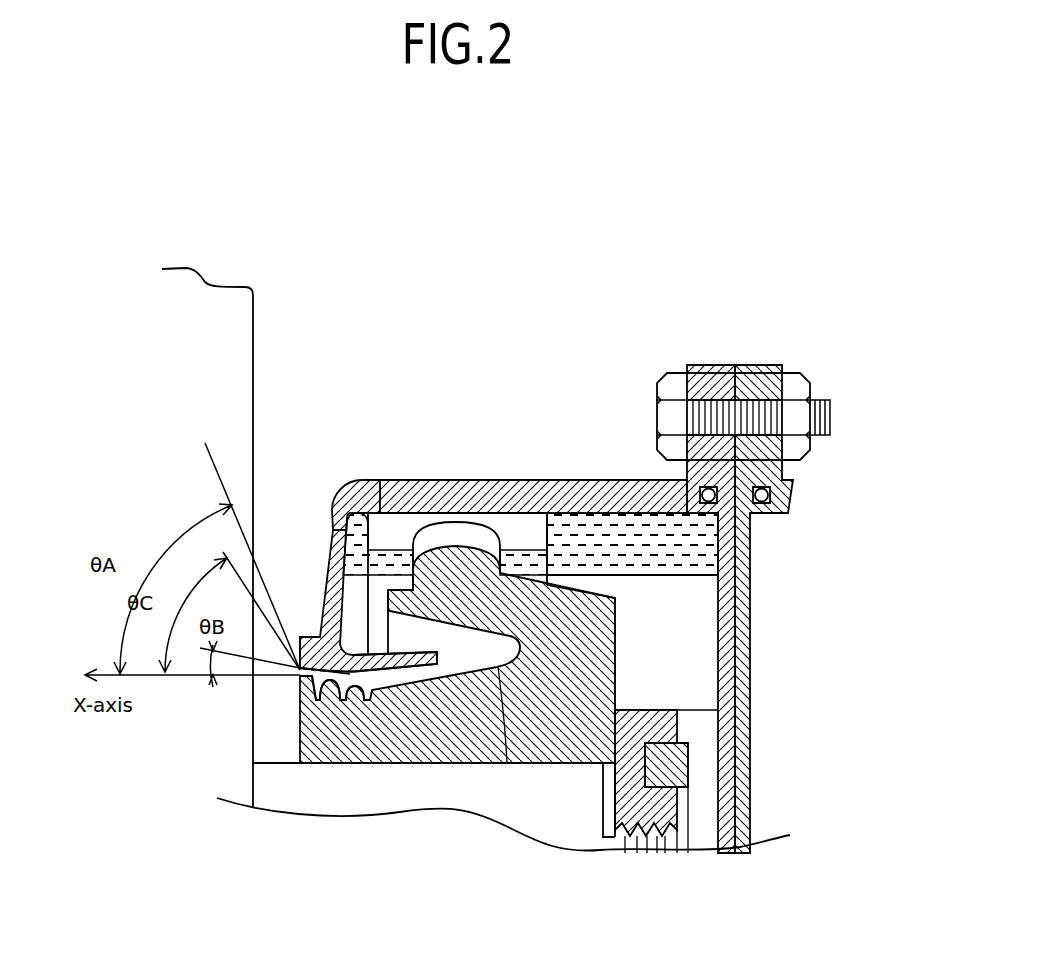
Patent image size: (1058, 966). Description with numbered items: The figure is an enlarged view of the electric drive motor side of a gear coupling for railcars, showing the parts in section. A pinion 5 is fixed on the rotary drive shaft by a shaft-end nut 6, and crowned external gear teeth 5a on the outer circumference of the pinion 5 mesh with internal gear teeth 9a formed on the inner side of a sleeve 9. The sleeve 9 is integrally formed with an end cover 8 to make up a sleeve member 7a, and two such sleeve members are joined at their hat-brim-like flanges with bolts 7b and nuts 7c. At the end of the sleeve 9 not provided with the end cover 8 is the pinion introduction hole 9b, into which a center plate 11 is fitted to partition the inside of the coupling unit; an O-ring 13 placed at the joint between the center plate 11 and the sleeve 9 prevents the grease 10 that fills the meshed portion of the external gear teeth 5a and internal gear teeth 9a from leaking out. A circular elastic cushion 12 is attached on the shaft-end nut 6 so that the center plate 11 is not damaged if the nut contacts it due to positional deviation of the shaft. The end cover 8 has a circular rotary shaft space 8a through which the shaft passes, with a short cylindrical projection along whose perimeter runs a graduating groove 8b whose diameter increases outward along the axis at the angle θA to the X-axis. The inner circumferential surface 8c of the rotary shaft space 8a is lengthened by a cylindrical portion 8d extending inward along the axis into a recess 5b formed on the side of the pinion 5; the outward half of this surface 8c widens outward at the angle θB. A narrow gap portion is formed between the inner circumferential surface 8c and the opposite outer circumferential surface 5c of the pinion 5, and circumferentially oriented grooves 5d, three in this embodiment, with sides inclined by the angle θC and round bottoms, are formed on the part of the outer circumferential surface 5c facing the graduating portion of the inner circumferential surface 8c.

The pinion 5 is at (470, 567).
The external gear teeth 5a is at (443, 537).
The recess 5b is at (507, 763).
The outer circumferential surface 5c is at (338, 712).
The circumferentially oriented grooves 5d is at (313, 712).
The shaft-end nut 6 is at (665, 710).
The sleeve member 7a is at (337, 482).
The bolts 7b is at (688, 365).
The nuts 7c is at (795, 372).
The end cover 8 is at (330, 547).
The rotary shaft space 8a is at (410, 670).
The graduating groove 8b is at (318, 637).
The inner circumferential surface 8c is at (370, 693).
The cylindrical portion 8d is at (423, 643).
The sleeve 9 is at (541, 480).
The internal gear teeth 9a is at (393, 530).
The pinion introduction hole 9b is at (672, 523).
The grease 10 is at (588, 530).
The center plate 11 is at (718, 638).
The elastic cushion 12 is at (685, 743).
The O-ring 13 is at (702, 494).